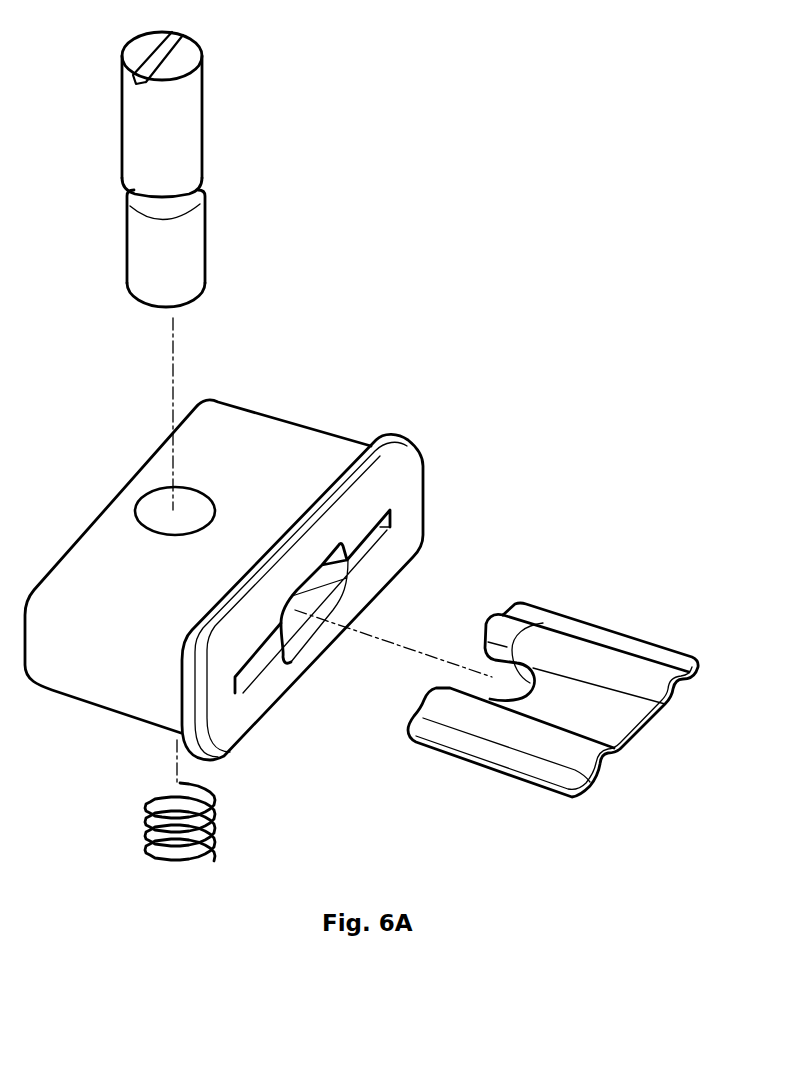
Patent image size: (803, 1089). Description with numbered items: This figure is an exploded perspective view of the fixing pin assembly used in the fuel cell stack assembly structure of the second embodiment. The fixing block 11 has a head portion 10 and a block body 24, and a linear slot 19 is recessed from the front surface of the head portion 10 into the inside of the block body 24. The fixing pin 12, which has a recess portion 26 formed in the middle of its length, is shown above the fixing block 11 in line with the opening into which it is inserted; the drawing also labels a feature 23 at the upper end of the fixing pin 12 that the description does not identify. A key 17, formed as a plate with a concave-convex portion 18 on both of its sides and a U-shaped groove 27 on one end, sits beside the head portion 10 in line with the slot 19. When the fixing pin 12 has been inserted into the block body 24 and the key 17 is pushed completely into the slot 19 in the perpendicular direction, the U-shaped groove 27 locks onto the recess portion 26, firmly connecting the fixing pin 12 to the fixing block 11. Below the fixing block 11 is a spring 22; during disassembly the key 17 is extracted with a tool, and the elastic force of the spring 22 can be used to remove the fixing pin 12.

The head portion 10 is at (405, 469).
The fixing block 11 is at (306, 419).
The fixing pin 12 is at (213, 117).
The key 17 is at (615, 716).
The concave-convex portion 18 is at (670, 670).
The slot 19 is at (372, 541).
The spring 22 is at (216, 808).
The screwdriver slot 23 is at (150, 52).
The block body 24 is at (253, 426).
The recess portion 26 is at (190, 193).
The U-shaped groove 27 is at (543, 623).